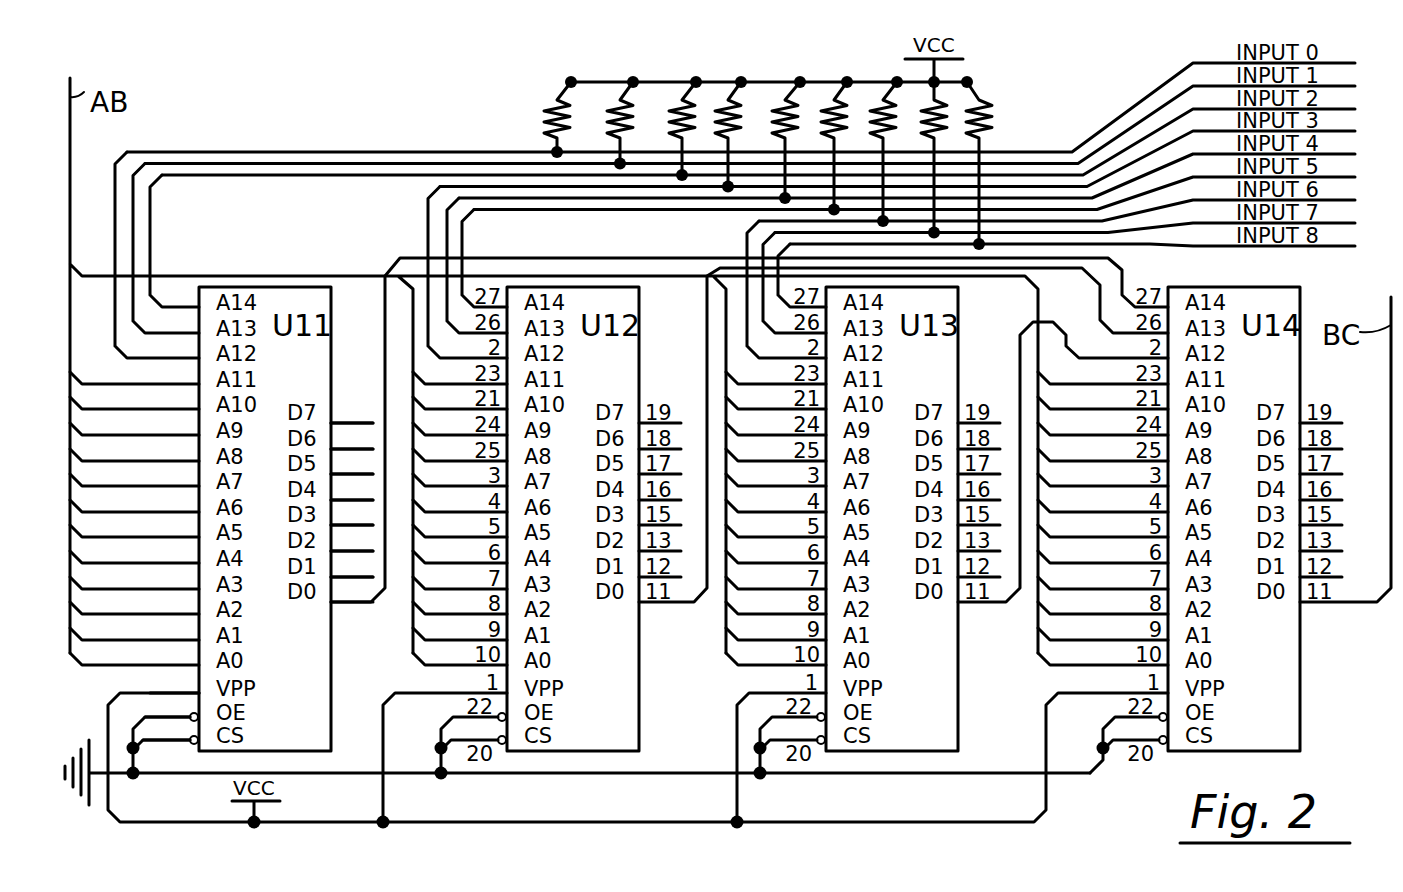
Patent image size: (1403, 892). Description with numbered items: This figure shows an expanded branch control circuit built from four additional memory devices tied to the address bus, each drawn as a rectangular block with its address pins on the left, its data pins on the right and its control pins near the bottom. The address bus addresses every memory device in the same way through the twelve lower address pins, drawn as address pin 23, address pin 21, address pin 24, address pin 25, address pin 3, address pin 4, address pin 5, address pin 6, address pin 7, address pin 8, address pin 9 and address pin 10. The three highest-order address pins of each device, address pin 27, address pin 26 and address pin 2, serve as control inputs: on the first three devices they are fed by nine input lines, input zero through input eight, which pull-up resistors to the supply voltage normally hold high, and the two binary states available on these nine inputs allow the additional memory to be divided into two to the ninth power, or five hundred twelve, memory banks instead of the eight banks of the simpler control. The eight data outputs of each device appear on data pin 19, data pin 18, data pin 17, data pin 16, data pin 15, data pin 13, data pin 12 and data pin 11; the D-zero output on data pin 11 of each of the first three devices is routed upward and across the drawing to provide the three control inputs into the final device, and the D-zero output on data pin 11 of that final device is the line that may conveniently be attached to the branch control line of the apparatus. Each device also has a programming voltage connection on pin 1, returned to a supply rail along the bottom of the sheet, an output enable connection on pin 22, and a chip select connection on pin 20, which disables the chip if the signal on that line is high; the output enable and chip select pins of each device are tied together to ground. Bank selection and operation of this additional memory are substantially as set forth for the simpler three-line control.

The address pin A14 27 is at (174, 242).
The address pin A13 26 is at (166, 250).
The address pin A12 2 is at (157, 256).
The address pin A11 23 is at (134, 374).
The address pin A10 21 is at (134, 399).
The address pin A9 24 is at (134, 425).
The address pin A8 25 is at (134, 451).
The address pin A7 3 is at (134, 476).
The address pin A6 4 is at (134, 502).
The address pin A5 5 is at (134, 527).
The address pin A4 6 is at (134, 553).
The address pin A3 7 is at (134, 579).
The address pin A2 8 is at (134, 604).
The address pin A1 9 is at (134, 630).
The address pin A0 10 is at (134, 655).
The VPP pin 1 is at (174, 683).
The output enable pin OE 22 is at (167, 707).
The chip select pin CS 20 is at (166, 753).
The data pin D7 19 is at (352, 413).
The data pin D6 18 is at (352, 439).
The data pin D5 17 is at (352, 464).
The data pin D4 16 is at (352, 490).
The data pin D3 15 is at (352, 515).
The data pin D2 13 is at (352, 541).
The data pin D1 12 is at (352, 567).
The data pin D0 11 is at (352, 592).